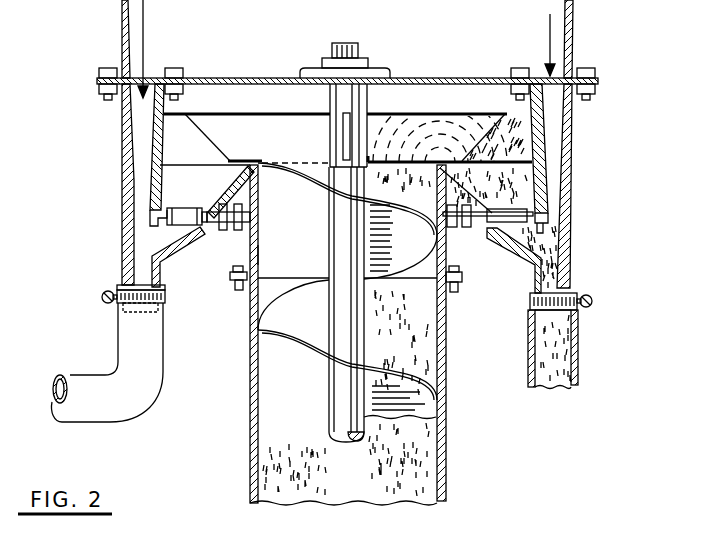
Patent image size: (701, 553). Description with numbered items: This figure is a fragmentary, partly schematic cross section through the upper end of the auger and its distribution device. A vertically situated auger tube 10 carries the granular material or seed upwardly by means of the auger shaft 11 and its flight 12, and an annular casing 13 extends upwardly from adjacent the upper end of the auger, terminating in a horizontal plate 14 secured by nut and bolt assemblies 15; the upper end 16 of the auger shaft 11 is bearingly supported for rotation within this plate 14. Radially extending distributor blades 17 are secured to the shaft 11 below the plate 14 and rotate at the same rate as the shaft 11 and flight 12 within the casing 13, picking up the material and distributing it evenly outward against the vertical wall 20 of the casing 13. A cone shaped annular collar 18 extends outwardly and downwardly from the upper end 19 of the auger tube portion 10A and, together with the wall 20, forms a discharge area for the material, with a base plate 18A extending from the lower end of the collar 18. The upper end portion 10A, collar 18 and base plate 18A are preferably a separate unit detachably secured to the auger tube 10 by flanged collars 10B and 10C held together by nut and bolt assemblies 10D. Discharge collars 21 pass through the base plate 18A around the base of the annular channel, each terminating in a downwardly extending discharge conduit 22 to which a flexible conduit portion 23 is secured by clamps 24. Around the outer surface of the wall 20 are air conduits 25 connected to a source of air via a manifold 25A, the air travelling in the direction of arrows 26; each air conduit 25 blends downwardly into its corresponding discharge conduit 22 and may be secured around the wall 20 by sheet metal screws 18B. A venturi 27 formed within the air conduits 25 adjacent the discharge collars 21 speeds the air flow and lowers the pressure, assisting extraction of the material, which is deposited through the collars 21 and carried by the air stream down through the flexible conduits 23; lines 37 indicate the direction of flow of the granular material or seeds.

The auger tube 10 is at (248, 365).
The upper end portion of the auger tube 10A is at (260, 254).
The flanged collar 10B is at (230, 272).
The flanged collar 10C is at (233, 282).
The nut and bolt assemblies 10D is at (241, 290).
The auger shaft 11 is at (340, 406).
The auger flight 12 is at (303, 348).
The annular casing 13 is at (164, 118).
The horizontal plate 14 is at (272, 78).
The nut and bolt assemblies 15 is at (173, 70).
The upper end of the auger shaft 16 is at (339, 94).
The distributor blades 17 is at (254, 119).
The cone shaped annular collar 18 is at (225, 185).
The base plate 18A is at (252, 194).
The sheet metal screws 18B is at (239, 227).
The upper end of the auger tube portion 19 is at (312, 160).
The vertical wall of the casing 20 is at (165, 157).
The discharge collars 21 is at (185, 220).
The discharge conduit 22 is at (216, 170).
The flexible conduit portion 23 is at (143, 400).
The clamps 24 is at (104, 297).
The air conduits 25 is at (118, 146).
The manifold 25A is at (121, 18).
The arrows 26 is at (147, 25).
The venturi 27 is at (553, 215).
The lines indicating direction of flow 37 is at (452, 125).